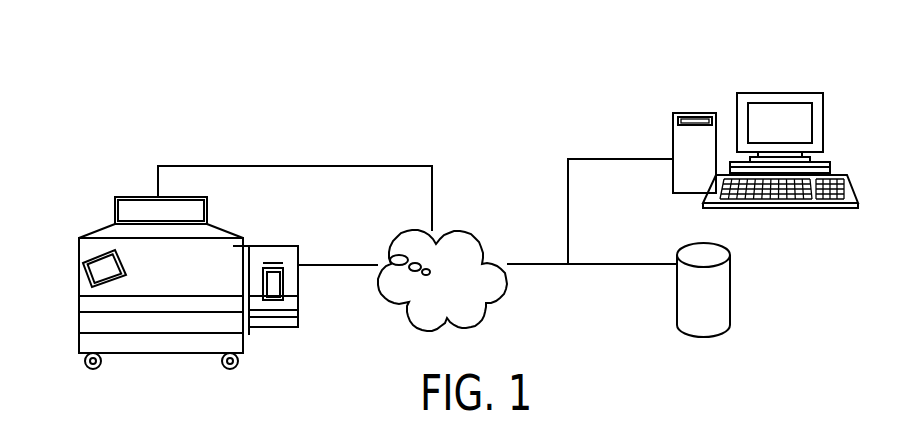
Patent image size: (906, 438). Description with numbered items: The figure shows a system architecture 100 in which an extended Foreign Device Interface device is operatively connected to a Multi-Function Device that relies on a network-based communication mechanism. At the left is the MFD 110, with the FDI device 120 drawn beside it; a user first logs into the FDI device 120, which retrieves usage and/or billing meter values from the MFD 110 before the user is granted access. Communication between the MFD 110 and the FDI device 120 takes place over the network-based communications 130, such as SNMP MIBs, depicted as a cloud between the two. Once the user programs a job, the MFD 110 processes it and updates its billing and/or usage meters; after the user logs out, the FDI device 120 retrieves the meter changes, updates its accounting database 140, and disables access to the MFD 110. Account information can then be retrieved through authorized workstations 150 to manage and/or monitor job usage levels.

The system architecture 100 is at (212, 96).
The MFD 110 is at (100, 263).
The FDI device 120 is at (273, 253).
The network-based communications 130 is at (473, 298).
The accounting database 140 is at (677, 293).
The authorized workstations 150 is at (673, 132).